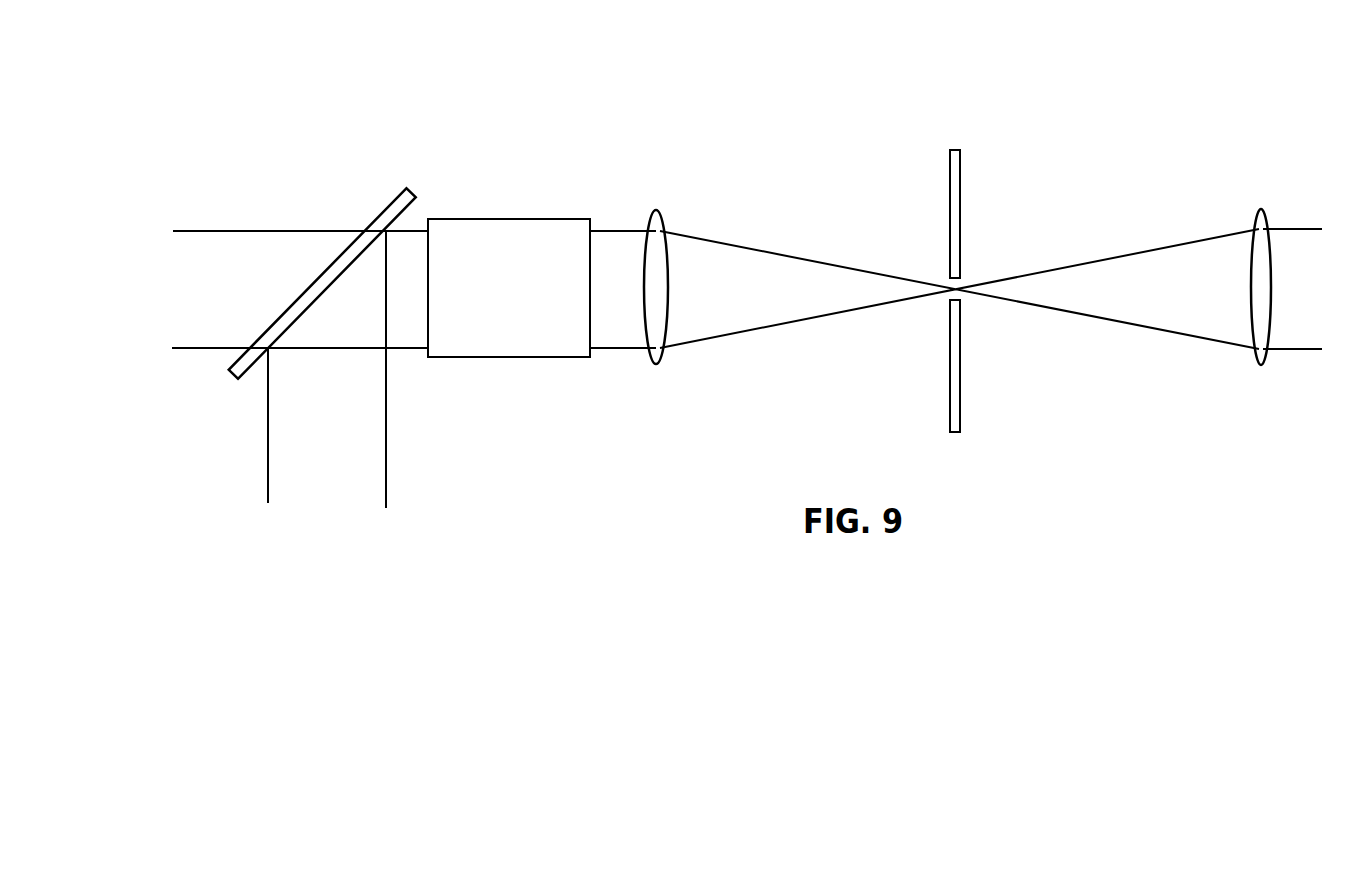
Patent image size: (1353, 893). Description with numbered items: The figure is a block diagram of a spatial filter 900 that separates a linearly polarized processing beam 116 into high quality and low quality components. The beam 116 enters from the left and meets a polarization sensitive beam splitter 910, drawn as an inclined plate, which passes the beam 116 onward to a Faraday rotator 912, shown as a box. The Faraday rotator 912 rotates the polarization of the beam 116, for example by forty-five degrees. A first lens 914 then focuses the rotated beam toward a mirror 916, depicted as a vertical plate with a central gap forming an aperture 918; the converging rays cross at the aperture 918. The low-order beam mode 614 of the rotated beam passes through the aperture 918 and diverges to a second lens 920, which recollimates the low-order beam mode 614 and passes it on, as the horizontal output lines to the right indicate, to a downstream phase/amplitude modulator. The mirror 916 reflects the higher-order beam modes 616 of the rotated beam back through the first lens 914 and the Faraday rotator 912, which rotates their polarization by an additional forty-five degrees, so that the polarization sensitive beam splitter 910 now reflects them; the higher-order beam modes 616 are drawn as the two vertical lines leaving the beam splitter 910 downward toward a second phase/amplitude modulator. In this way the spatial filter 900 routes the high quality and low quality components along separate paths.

The spatial filter 900 is at (408, 70).
The linearly polarized processing beam 116 is at (215, 348).
The polarization sensitive beam splitter 910 is at (396, 192).
The higher-order beam modes 616 is at (386, 418).
The Faraday rotator 912 is at (488, 343).
The first lens 914 is at (656, 210).
The low-order beam mode 614 is at (1141, 250).
The mirror 916 is at (948, 162).
The aperture 918 is at (940, 277).
The second lens 920 is at (1258, 210).